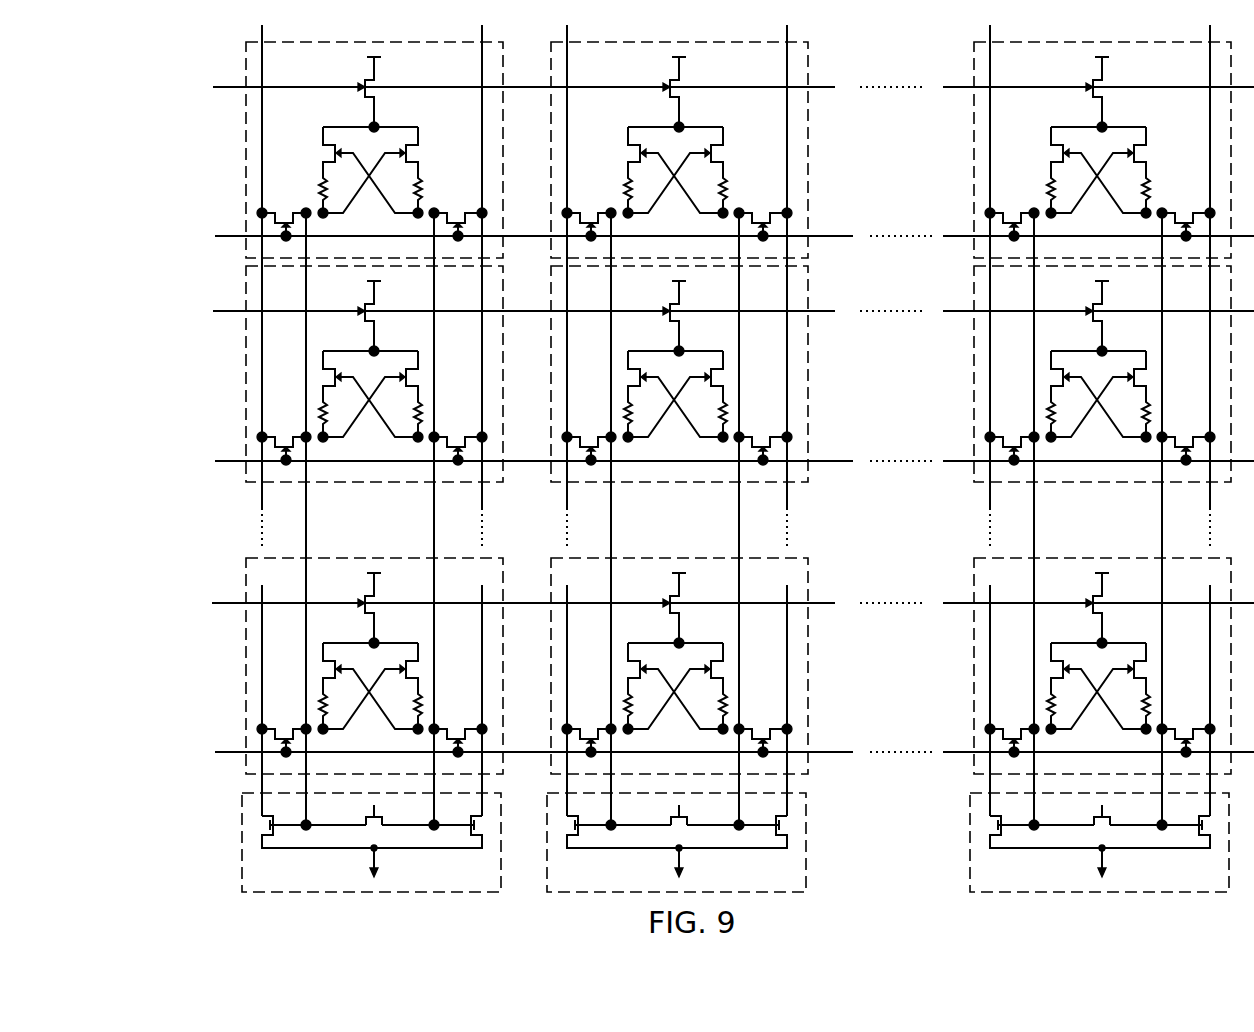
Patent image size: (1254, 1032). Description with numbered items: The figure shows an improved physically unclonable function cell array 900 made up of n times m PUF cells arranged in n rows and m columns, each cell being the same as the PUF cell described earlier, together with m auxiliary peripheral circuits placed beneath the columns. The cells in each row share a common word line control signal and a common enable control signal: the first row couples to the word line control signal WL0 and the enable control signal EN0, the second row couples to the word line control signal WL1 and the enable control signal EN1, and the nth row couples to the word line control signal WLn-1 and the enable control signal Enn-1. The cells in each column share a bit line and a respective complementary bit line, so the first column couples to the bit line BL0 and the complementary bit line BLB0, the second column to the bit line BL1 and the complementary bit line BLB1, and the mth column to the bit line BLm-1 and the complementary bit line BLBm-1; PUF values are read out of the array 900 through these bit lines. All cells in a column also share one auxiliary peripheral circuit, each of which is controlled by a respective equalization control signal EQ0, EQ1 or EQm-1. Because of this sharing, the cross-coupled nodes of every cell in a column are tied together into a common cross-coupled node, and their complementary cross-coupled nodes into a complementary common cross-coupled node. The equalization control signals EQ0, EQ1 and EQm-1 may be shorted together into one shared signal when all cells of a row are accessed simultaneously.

The PUF cell array 900 is at (155, 82).
The enable control signal EN0 is at (711, 86).
The enable control signal EN1 is at (706, 320).
The enable control signal Enn-1 is at (704, 605).
The word line control signal WL0 is at (705, 241).
The word line control signal WL1 is at (705, 448).
The word line control signal WLn-1 is at (699, 736).
The bit line BL0 is at (284, 415).
The complementary bit line BLB0 is at (453, 415).
The bit line BL1 is at (589, 415).
The complementary bit line BLB1 is at (762, 415).
The bit line BLm-1 is at (1024, 415).
The complementary bit line BLBm-1 is at (1174, 415).
The equalization control signal EQ0 is at (371, 841).
The equalization control signal EQ1 is at (676, 841).
The equalization control signal EQm-1 is at (1099, 841).